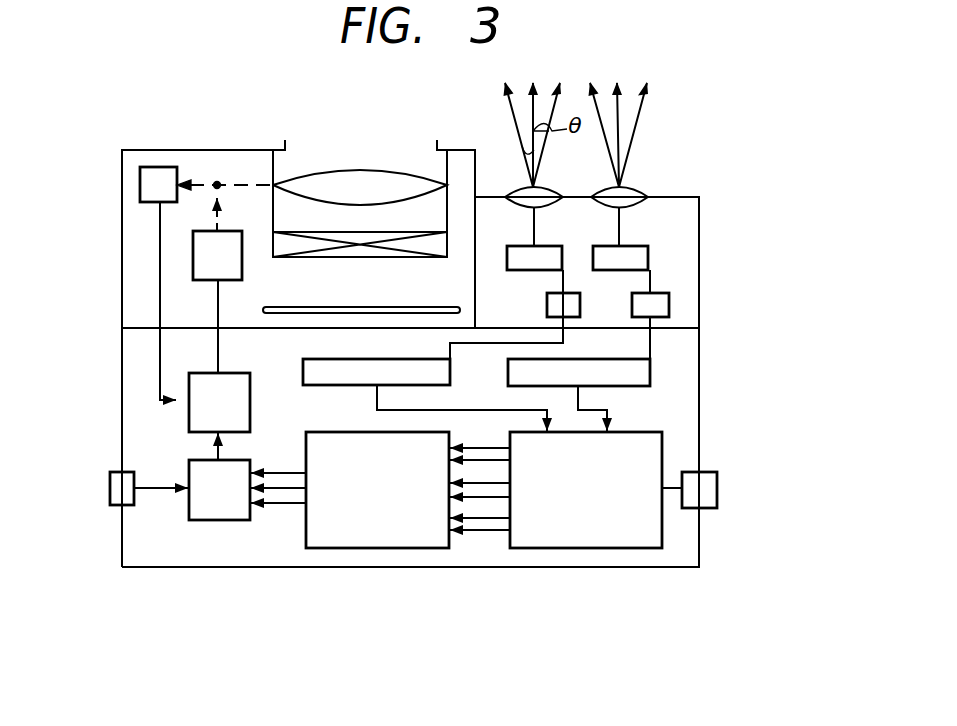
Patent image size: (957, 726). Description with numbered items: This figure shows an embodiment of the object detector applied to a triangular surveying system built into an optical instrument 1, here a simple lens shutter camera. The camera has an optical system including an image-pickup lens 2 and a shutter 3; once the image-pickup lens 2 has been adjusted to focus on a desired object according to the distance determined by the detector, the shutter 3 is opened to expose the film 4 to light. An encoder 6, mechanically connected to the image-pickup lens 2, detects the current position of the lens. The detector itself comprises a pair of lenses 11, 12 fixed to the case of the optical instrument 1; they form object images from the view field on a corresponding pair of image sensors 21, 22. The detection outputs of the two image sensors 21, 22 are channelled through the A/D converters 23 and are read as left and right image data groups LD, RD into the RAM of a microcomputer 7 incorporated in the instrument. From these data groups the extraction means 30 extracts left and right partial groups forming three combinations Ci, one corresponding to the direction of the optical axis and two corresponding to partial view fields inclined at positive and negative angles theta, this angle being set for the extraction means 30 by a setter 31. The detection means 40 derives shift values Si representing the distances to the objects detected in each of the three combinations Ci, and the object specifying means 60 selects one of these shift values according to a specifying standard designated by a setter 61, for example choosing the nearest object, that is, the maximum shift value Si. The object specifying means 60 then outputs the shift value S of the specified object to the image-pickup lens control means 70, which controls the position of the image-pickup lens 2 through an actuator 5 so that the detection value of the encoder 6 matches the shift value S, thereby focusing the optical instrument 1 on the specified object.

The optical instrument 1 is at (122, 162).
The image-pickup lens 2 is at (396, 170).
The shutter 3 is at (288, 258).
The film 4 is at (410, 307).
The actuator 5 is at (193, 252).
The encoder 6 is at (140, 195).
The microcomputer 7 is at (122, 553).
The lens 11 is at (556, 190).
The lens 12 is at (648, 190).
The image sensor 21 is at (518, 270).
The image sensor 22 is at (638, 244).
The A/D converters 23 is at (580, 307).
The extraction means 30 is at (538, 548).
The setter 31 is at (720, 493).
The detection means 40 is at (332, 548).
The object specifying means 60 is at (207, 520).
The setter 61 is at (110, 495).
The image-pickup lens control means 70 is at (189, 414).
The left image data group LD is at (303, 370).
The right image data group RD is at (650, 373).
The shift value S is at (217, 447).
The shift values Si is at (278, 505).
The combinations of partial groups Ci is at (482, 530).